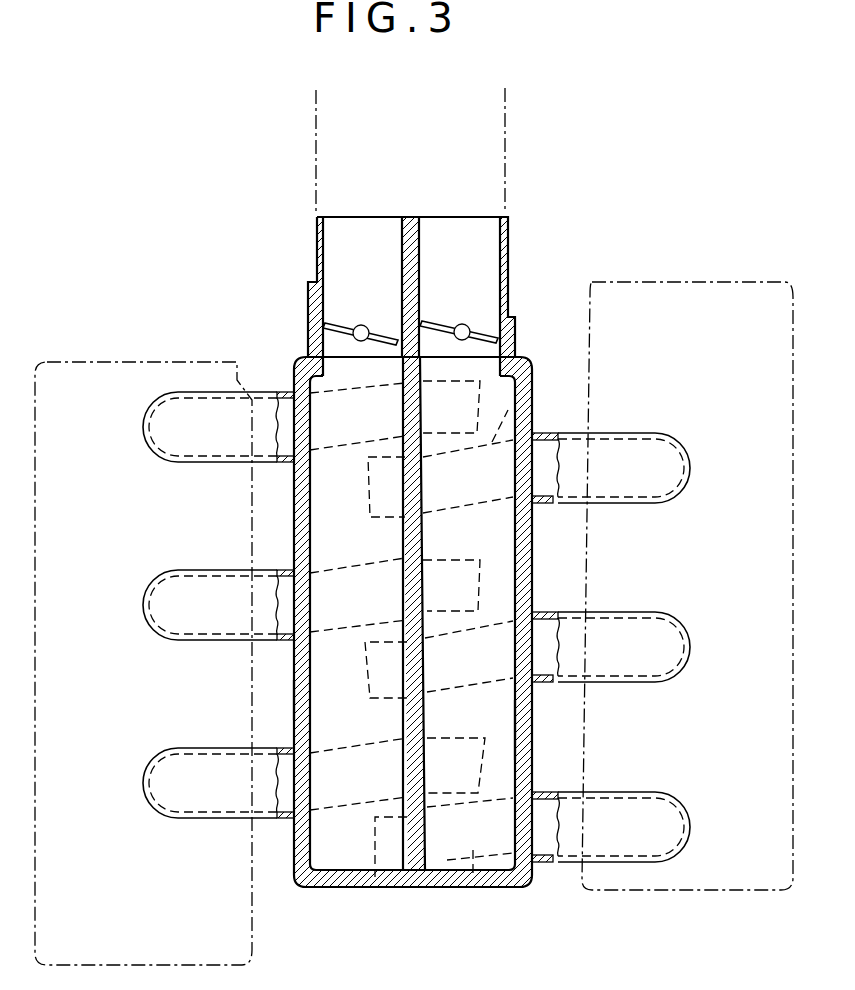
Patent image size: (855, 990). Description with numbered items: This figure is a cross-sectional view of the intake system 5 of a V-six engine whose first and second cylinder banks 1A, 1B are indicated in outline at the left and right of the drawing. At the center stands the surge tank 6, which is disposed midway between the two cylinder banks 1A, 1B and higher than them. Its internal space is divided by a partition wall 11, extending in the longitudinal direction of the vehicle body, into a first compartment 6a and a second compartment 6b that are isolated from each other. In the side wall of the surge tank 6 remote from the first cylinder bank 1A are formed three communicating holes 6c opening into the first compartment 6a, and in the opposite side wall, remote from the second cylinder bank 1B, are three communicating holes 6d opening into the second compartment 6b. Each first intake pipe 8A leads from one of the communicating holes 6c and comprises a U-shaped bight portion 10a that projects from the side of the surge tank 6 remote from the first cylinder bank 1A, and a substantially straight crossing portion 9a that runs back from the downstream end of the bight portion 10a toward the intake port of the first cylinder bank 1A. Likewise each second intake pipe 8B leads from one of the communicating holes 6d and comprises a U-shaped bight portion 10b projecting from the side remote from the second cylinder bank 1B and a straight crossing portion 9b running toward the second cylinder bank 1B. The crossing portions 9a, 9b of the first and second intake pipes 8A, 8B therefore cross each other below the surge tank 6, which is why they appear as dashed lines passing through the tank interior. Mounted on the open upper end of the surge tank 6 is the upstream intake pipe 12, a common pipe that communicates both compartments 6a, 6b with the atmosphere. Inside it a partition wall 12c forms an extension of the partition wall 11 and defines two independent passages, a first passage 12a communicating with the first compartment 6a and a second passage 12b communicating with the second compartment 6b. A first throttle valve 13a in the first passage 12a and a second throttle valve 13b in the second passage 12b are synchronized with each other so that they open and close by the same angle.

The first cylinder bank 1A is at (138, 359).
The second cylinder bank 1B is at (672, 280).
The intake system 5 is at (506, 892).
The surge tank 6 is at (532, 580).
The first compartment 6a is at (524, 722).
The second compartment 6b is at (295, 697).
The communicating holes 6c is at (558, 434).
The communicating holes 6d is at (288, 392).
The first intake pipe 8A is at (699, 454).
The second intake pipe 8B is at (138, 446).
The crossing portion 9a is at (537, 396).
The crossing portion 9b is at (352, 447).
The U-shaped bight portion 10a is at (658, 504).
The U-shaped bight portion 10b is at (157, 397).
The partition wall 11 is at (402, 533).
The upstream intake pipe 12 is at (508, 262).
The first passage 12a is at (462, 232).
The second passage 12b is at (335, 251).
The partition wall 12c is at (402, 240).
The first throttle valve 13a is at (482, 330).
The second throttle valve 13b is at (340, 322).